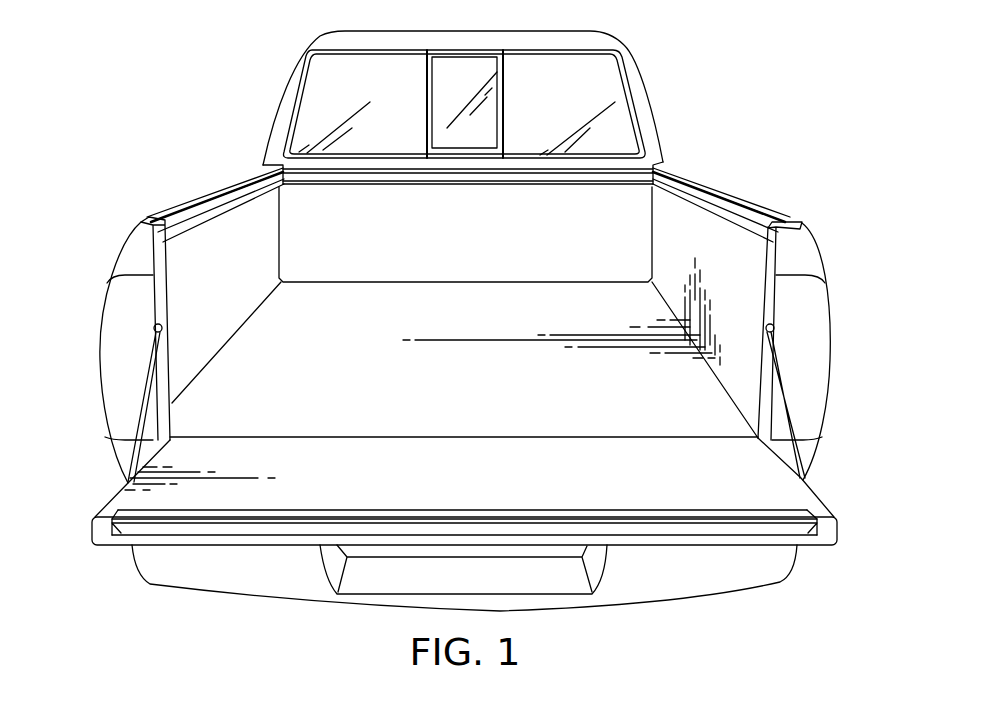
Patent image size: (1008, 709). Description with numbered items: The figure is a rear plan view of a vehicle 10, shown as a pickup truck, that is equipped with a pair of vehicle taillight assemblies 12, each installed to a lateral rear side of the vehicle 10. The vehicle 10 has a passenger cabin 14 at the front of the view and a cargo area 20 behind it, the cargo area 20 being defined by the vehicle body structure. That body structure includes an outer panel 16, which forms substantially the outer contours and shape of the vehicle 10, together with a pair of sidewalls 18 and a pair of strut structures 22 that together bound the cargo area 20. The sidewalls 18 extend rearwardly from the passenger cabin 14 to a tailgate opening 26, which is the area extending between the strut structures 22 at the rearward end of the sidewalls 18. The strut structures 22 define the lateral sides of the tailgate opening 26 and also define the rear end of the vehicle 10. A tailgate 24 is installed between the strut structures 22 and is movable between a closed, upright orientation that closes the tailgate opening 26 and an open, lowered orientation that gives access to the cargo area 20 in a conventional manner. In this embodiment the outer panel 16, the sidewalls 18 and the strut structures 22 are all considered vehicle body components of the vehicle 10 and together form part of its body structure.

The vehicle 10 is at (746, 86).
The vehicle taillight assembly 12 is at (73, 316).
The passenger cabin 14 is at (290, 82).
The outer panel 16 is at (112, 257).
The sidewalls 18 is at (208, 192).
The cargo area 20 is at (677, 202).
The strut structures 22 is at (120, 403).
The tailgate 24 is at (826, 540).
The tailgate opening 26 is at (210, 353).